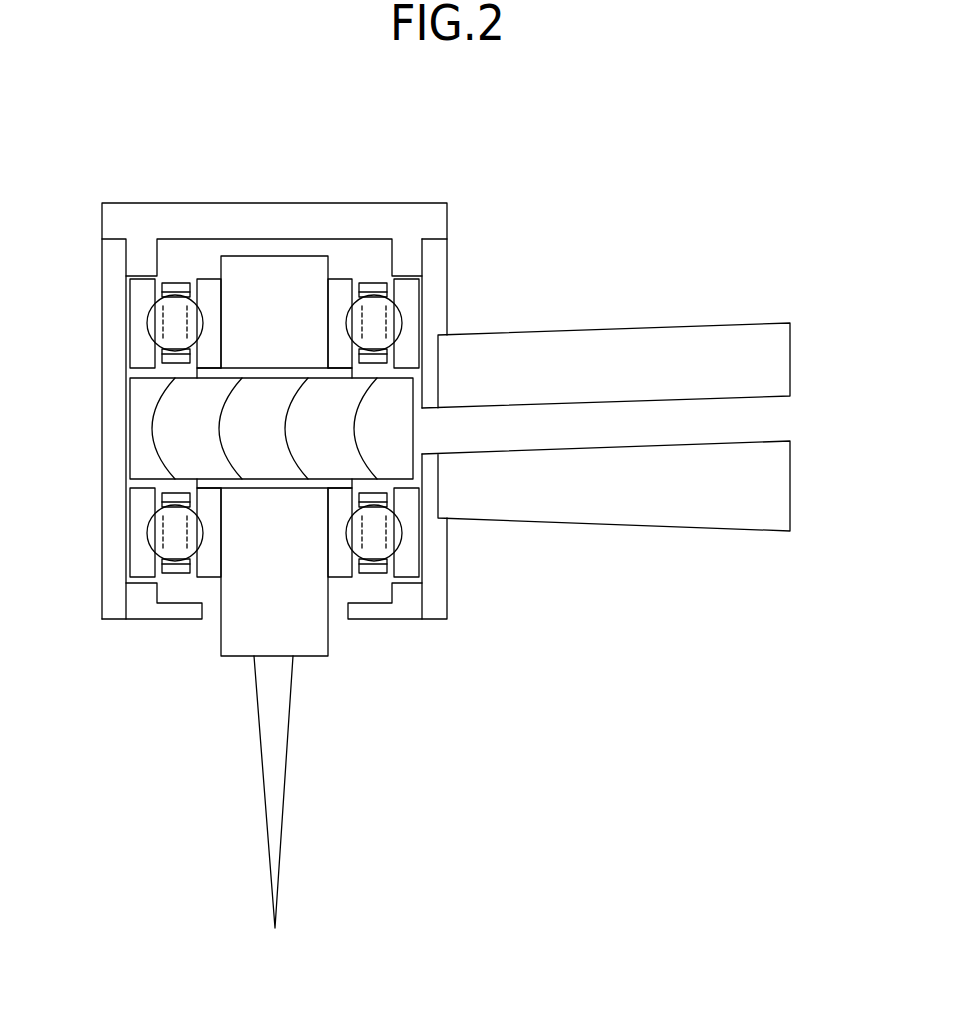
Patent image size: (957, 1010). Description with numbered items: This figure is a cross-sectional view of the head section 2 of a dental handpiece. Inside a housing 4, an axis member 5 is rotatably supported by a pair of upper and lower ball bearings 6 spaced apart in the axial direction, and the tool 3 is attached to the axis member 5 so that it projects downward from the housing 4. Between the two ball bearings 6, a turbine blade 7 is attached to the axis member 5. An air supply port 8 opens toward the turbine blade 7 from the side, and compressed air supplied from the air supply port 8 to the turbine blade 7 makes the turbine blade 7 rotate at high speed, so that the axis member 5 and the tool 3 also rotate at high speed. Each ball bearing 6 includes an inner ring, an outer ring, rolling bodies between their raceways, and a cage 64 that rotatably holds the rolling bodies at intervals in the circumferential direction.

The head section 2 is at (645, 92).
The tool 3 is at (278, 755).
The housing 4 is at (253, 220).
The axis member 5 is at (230, 637).
The ball bearing 6 is at (122, 346).
The cage 64 is at (173, 283).
The turbine blade 7 is at (153, 447).
The air supply port 8 is at (783, 417).